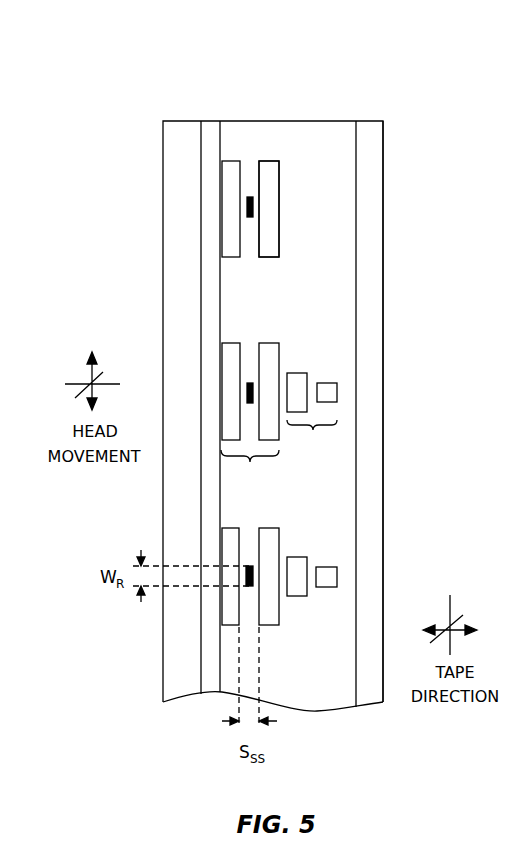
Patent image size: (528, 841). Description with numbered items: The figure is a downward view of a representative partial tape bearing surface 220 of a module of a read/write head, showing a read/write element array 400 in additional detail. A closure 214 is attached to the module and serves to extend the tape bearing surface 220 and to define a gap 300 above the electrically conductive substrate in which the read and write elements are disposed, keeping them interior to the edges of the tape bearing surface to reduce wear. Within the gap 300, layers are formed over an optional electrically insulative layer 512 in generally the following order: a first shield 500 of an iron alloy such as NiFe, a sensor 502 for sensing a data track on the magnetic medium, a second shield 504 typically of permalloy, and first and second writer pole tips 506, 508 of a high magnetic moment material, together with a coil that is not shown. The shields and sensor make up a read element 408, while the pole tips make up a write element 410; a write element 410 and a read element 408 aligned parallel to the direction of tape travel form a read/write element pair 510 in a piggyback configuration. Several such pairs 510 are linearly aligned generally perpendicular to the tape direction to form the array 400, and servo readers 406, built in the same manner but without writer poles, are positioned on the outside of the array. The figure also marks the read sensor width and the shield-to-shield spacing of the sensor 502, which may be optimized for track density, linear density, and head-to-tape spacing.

The read/write element array 400 is at (271, 92).
The gap 300 is at (328, 121).
The tape bearing surface 220 is at (163, 148).
The closure 214 is at (384, 143).
The electrically insulative layer 512 is at (201, 192).
The servo reader 406 is at (300, 205).
The first shield 500 is at (228, 343).
The sensor 502 is at (250, 383).
The second shield 504 is at (273, 343).
The first writer pole tip 506 is at (297, 373).
The second writer pole tip 508 is at (327, 383).
The read/write element pair 510 is at (402, 393).
The write element 410 is at (313, 430).
The read element 408 is at (250, 462).